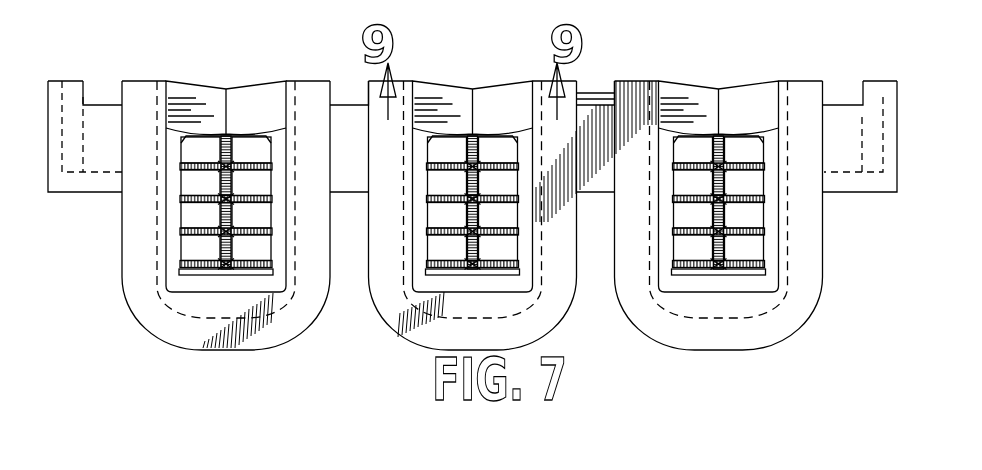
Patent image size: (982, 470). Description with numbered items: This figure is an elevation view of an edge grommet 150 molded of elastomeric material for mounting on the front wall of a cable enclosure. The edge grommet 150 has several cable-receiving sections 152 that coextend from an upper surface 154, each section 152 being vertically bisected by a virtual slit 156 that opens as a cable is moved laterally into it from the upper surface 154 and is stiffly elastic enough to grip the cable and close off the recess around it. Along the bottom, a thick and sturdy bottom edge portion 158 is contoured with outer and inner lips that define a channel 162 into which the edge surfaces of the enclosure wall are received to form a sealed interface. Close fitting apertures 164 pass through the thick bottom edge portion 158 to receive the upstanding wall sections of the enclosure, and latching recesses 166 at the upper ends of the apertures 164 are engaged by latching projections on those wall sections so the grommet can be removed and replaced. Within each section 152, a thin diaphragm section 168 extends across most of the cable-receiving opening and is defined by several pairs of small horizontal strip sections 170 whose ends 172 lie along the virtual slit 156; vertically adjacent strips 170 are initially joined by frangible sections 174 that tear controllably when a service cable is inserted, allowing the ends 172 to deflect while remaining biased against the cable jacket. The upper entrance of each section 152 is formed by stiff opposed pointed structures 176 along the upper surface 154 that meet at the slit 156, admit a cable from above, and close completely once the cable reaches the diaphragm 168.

The edge grommet 150 is at (640, 81).
The section 152 is at (207, 307).
The upper surface 154 is at (307, 80).
The virtual slit 156 is at (230, 103).
The bottom edge portion 158 is at (130, 226).
The channel 162 is at (73, 194).
The close fitting aperture 164 is at (65, 76).
The latching recess 166 is at (100, 104).
The diaphragm section 168 is at (357, 105).
The horizontal strip section 170 is at (200, 185).
The end 172 is at (231, 125).
The frangible section 174 is at (560, 153).
The stiff opposed pointed structure 176 is at (497, 98).